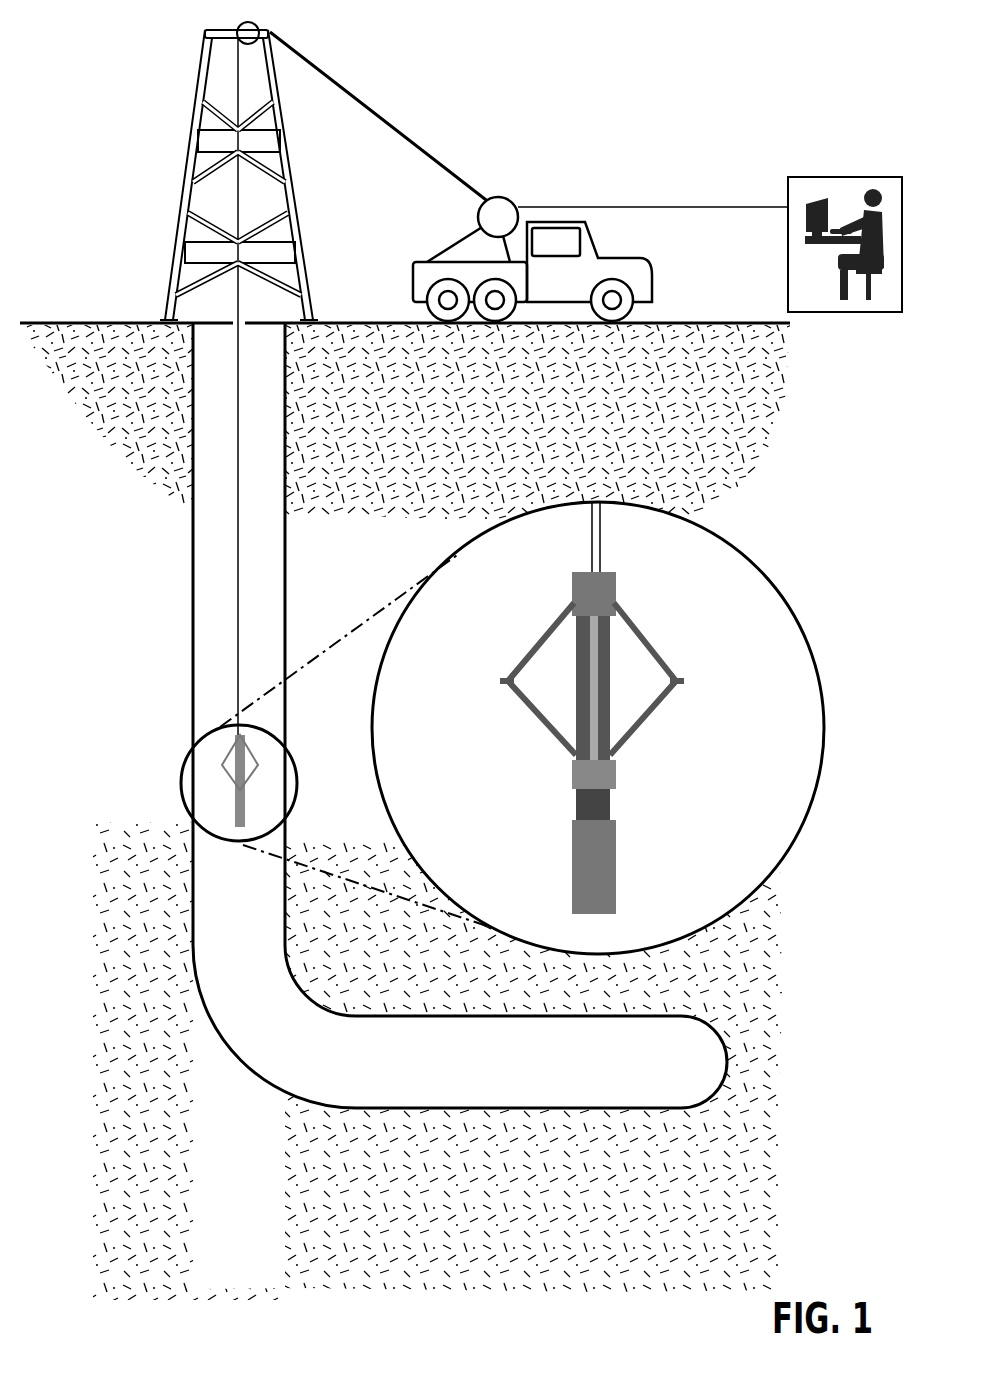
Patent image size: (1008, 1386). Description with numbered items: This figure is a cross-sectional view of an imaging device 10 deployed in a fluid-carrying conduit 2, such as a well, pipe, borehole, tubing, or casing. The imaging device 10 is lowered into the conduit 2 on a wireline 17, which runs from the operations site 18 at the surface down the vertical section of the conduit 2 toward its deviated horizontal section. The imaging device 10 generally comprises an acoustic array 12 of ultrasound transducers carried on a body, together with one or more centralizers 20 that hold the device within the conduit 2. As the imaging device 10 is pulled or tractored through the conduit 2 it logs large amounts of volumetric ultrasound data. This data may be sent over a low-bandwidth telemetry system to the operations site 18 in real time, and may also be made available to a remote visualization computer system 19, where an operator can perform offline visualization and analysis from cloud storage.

The fluid-carrying conduit 2 is at (250, 907).
The imaging device 10 is at (213, 772).
The acoustic array 12 is at (616, 862).
The wireline 17 is at (405, 122).
The operations site 18 is at (192, 123).
The remote visualization computer system 19 is at (845, 206).
The centralizers 20 is at (630, 749).